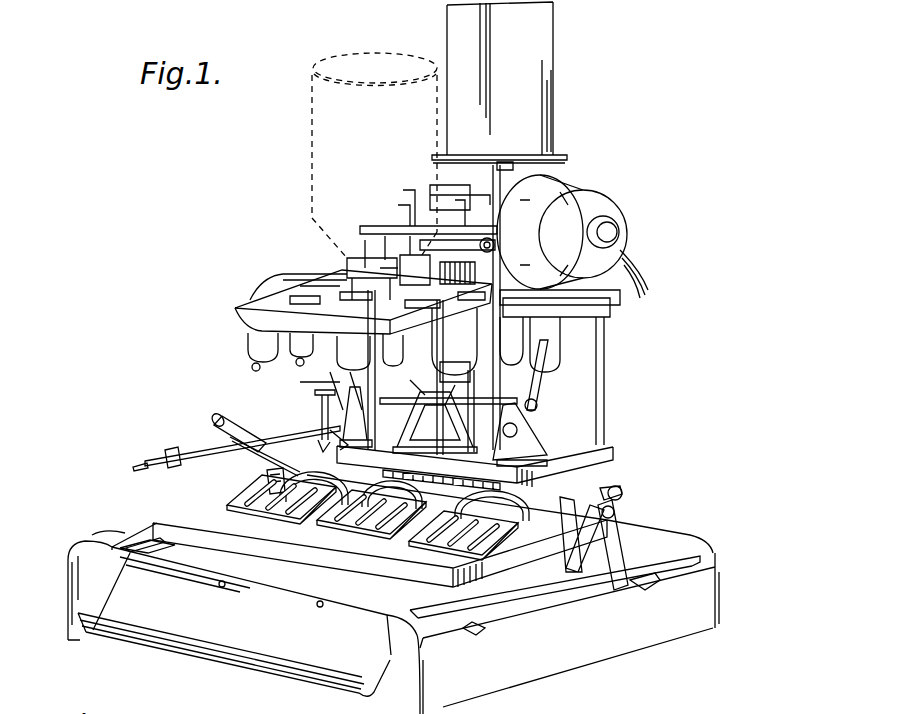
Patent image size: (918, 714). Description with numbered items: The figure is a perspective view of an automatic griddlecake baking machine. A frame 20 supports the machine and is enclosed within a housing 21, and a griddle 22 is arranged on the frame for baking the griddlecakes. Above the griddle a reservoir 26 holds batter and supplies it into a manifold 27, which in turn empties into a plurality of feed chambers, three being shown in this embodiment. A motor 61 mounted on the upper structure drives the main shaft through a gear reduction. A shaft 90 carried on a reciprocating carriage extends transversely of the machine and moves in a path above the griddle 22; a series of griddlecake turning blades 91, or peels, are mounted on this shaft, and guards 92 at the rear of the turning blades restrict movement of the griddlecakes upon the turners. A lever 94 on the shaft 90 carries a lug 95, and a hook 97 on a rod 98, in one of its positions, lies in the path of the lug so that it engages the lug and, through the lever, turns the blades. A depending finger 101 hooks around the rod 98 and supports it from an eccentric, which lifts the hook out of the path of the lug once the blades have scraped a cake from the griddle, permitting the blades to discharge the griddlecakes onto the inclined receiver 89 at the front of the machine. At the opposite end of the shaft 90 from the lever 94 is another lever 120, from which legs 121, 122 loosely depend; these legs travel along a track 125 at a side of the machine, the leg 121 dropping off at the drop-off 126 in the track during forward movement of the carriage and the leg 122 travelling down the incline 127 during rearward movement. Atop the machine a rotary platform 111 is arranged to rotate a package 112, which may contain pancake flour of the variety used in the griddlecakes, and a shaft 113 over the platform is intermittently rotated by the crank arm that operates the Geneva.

The frame 20 is at (130, 545).
The housing 21 is at (96, 533).
The griddle 22 is at (170, 522).
The reservoir 26 is at (310, 162).
The manifold 27 is at (293, 285).
The motor 61 is at (572, 240).
The inclined receiver 89 is at (123, 640).
The shaft 90 is at (336, 458).
The griddlecake turning blades 91 is at (232, 507).
The guards 92 is at (266, 484).
The lever 94 is at (234, 424).
The lug 95 is at (255, 450).
The hook 97 is at (163, 455).
The rod 98 is at (192, 452).
The depending finger 101 is at (318, 412).
The rotary platform 111 is at (556, 155).
The package 112 is at (549, 50).
The shaft 113 is at (513, 168).
The lever 120 is at (615, 519).
The leg 121 is at (566, 548).
The leg 122 is at (617, 588).
The track 125 is at (558, 600).
The drop-off 126 is at (478, 634).
The incline 127 is at (648, 588).